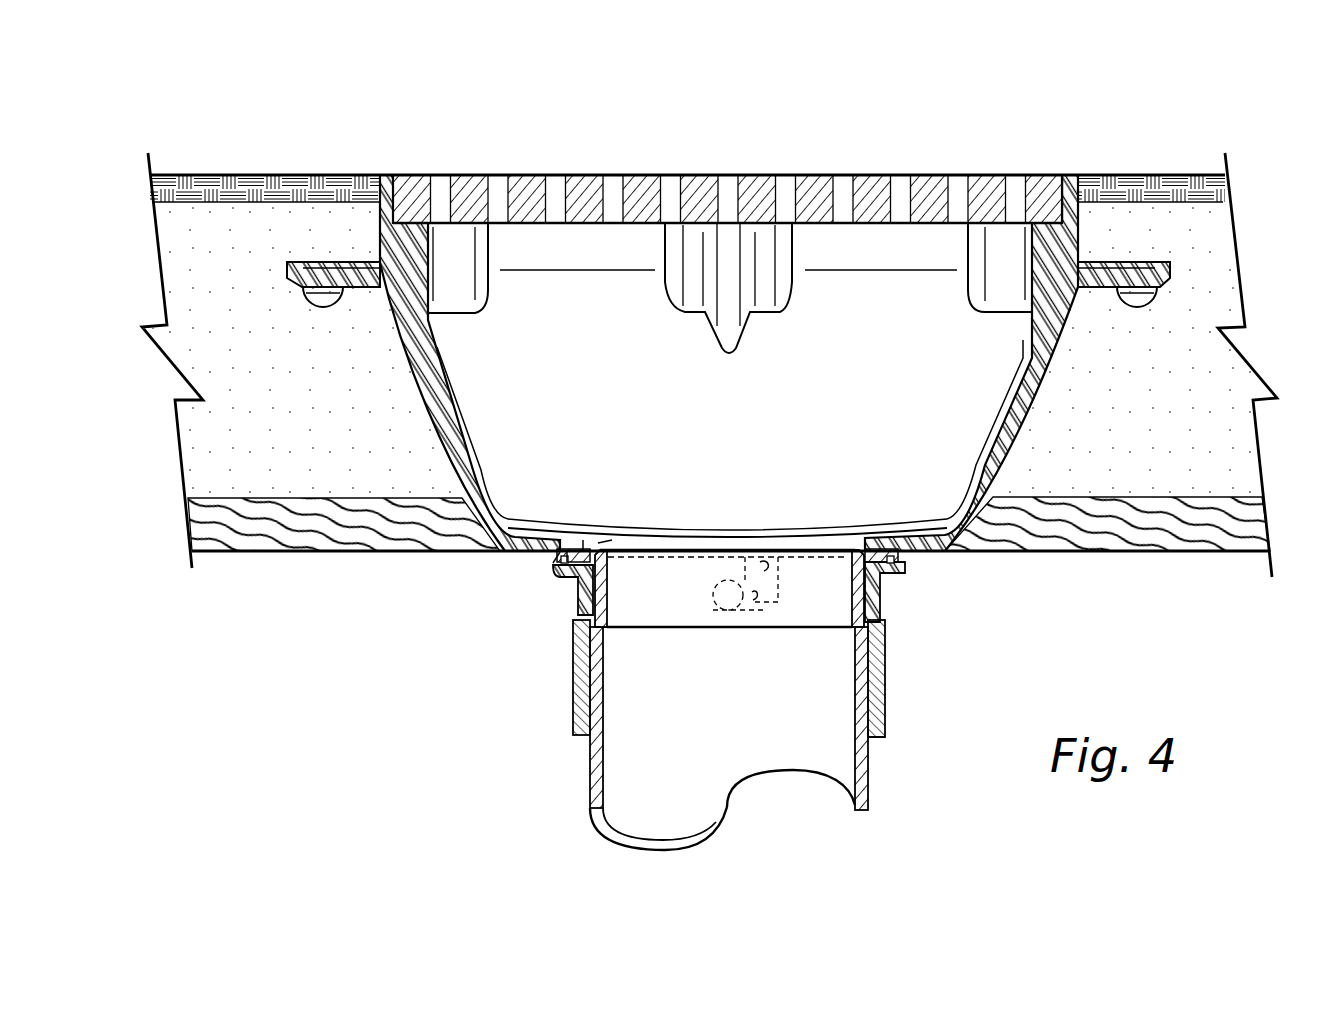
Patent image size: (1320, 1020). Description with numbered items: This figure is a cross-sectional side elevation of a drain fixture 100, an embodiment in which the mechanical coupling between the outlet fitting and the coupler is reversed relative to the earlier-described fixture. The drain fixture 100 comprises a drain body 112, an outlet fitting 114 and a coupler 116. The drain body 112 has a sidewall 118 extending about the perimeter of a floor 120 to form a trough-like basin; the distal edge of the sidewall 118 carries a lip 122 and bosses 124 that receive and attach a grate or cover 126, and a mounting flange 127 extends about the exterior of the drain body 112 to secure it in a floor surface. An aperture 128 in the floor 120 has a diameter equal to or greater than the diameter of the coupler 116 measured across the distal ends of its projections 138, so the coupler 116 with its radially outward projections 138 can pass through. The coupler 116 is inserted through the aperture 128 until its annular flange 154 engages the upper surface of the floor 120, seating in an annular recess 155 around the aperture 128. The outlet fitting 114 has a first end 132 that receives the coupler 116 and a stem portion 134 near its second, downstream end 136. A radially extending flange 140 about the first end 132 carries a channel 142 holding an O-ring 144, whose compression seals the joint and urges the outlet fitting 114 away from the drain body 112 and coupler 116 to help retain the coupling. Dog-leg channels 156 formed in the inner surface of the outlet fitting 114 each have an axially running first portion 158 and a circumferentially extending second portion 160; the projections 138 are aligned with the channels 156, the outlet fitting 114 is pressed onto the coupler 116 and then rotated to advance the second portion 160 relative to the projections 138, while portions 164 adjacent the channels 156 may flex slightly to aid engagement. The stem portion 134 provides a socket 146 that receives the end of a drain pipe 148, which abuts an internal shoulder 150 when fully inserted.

The drain fixture 100 is at (1053, 82).
The drain body 112 is at (868, 346).
The outlet fitting 114 is at (580, 710).
The coupler 116 is at (712, 566).
The sidewall 118 is at (1007, 430).
The floor 120 is at (530, 540).
The lip 122 is at (400, 178).
The bosses 124 is at (693, 252).
The cover 126 is at (870, 175).
The mounting flange 127 is at (1168, 277).
The aperture 128 is at (790, 452).
The first end 132 is at (912, 563).
The stem portion 134 is at (888, 692).
The second end 136 is at (887, 735).
The projections 138 is at (875, 593).
The radially extending flange 140 is at (553, 563).
The channel 142 is at (577, 580).
The O-ring 144 is at (567, 557).
The socket 146 is at (878, 673).
The pipe 148 is at (868, 793).
The shoulder 150 is at (885, 620).
The flange 154 is at (583, 550).
The annular recess 155 is at (600, 543).
The dog leg channels 156 is at (783, 578).
The first portion 158 is at (773, 565).
The second portion 160 is at (757, 592).
The portions 164 is at (735, 563).